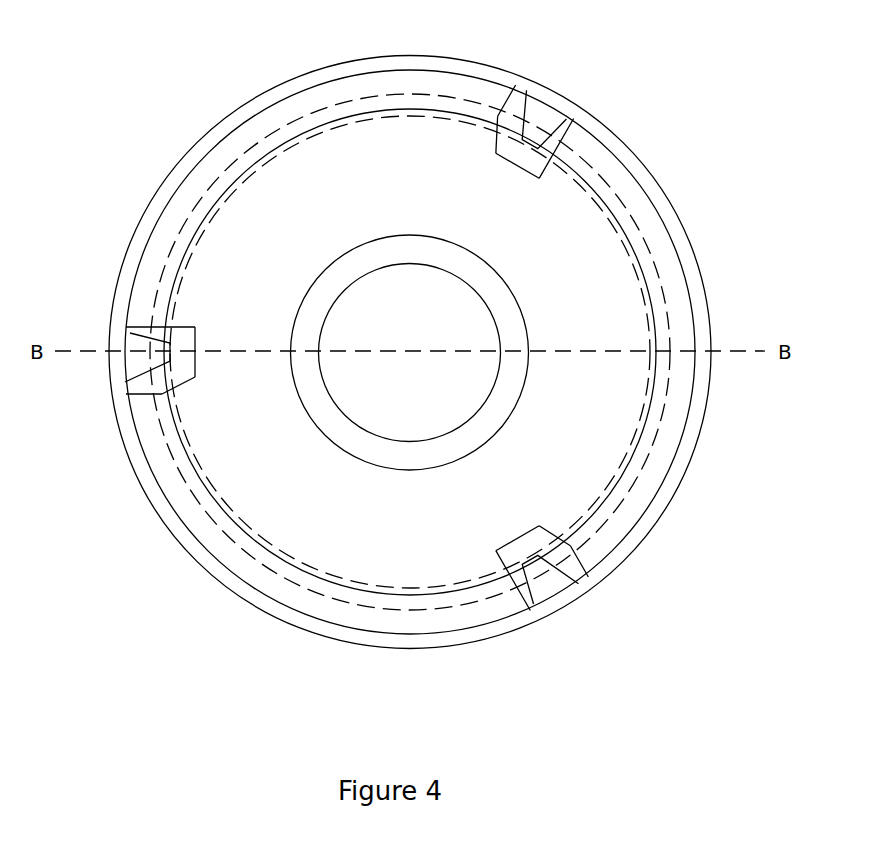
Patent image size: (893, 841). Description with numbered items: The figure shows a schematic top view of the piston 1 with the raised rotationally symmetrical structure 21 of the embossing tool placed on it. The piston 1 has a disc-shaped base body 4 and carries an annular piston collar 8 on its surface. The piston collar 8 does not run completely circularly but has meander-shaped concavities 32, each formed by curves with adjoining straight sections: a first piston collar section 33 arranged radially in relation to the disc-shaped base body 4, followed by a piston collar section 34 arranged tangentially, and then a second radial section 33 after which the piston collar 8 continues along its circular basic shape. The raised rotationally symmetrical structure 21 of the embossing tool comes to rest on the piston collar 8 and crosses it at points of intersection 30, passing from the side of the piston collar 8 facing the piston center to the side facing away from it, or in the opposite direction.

The piston 1 is at (206, 81).
The disc-shaped base body 4 is at (590, 296).
The annular piston collar 8 is at (200, 196).
The raised rotationally symmetrical structure 21 is at (668, 382).
The point of intersection 30 is at (150, 318).
The meander-shaped concavity 32 is at (152, 353).
The radially oriented piston collar section 33 is at (125, 333).
The tangentially oriented piston collar section 34 is at (162, 398).